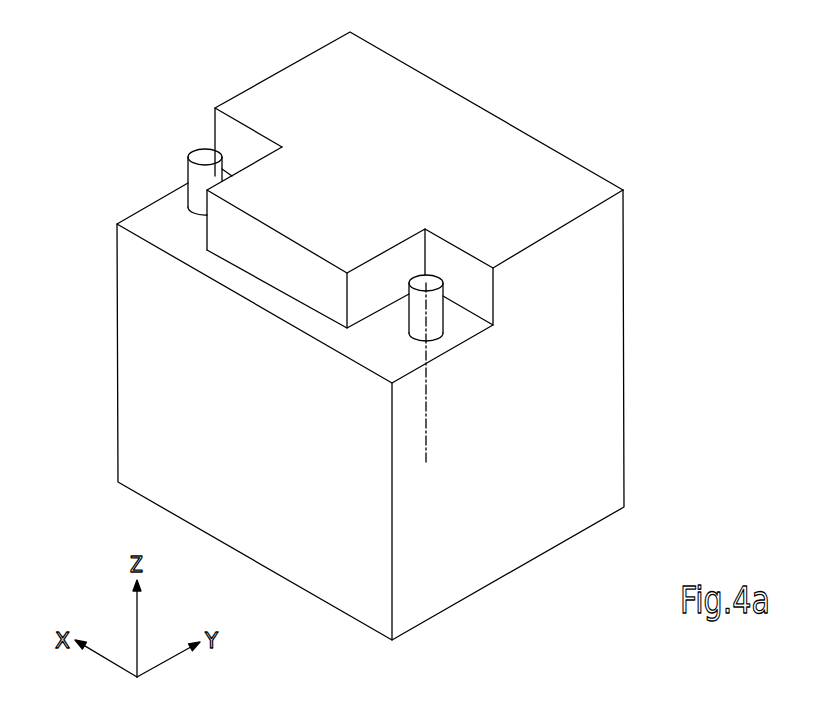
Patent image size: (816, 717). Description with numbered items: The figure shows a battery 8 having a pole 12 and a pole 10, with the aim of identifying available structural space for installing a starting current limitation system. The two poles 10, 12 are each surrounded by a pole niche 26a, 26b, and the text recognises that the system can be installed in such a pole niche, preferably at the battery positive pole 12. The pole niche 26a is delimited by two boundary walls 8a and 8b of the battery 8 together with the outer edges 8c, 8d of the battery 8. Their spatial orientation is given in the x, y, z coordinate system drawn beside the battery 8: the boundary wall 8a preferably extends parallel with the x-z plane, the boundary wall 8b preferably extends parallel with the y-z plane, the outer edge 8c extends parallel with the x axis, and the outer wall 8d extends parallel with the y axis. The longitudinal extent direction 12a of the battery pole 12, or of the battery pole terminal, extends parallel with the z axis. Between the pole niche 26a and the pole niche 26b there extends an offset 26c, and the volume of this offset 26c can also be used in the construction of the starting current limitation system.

The battery 8 is at (383, 174).
The boundary wall 8a is at (507, 248).
The boundary wall 8b is at (386, 250).
The outer edge 8c is at (360, 368).
The outer edge 8d is at (453, 350).
The pole 10 is at (200, 178).
The pole 12 is at (433, 320).
The longitudinal extent direction 12a is at (428, 447).
The pole niche 26a is at (493, 292).
The pole niche 26b is at (197, 123).
The offset 26c is at (256, 311).